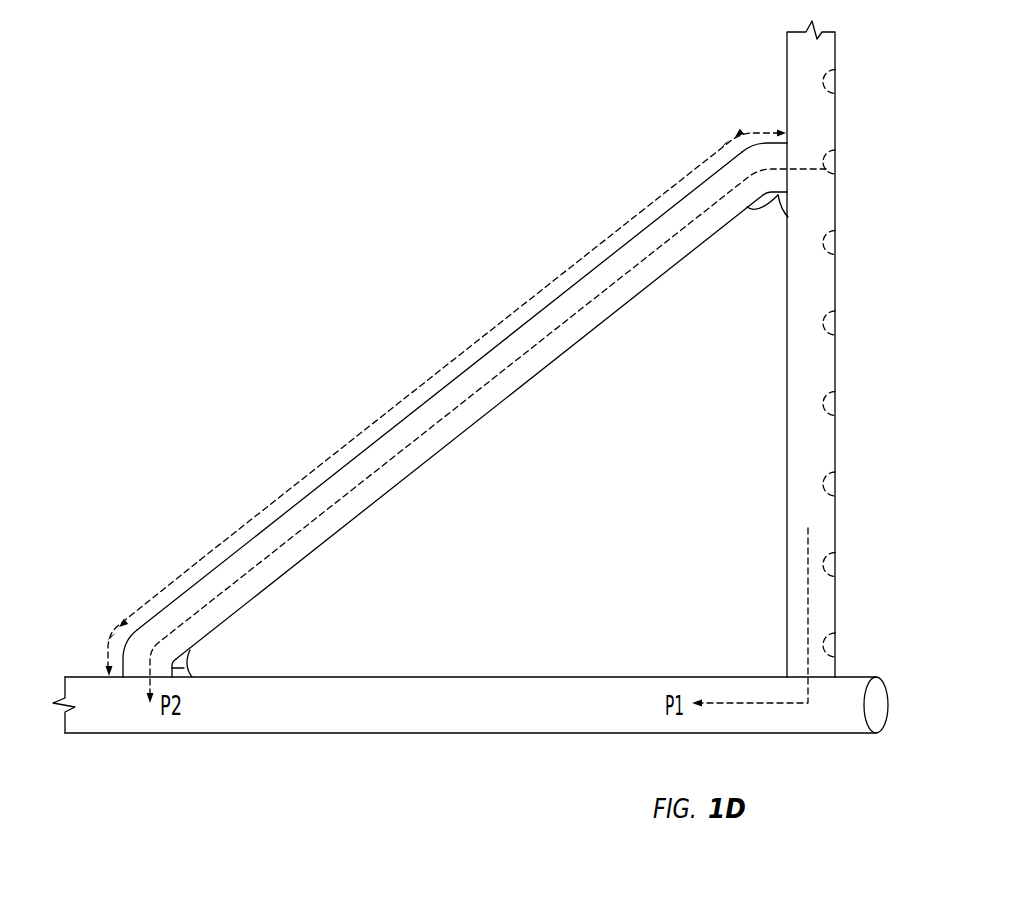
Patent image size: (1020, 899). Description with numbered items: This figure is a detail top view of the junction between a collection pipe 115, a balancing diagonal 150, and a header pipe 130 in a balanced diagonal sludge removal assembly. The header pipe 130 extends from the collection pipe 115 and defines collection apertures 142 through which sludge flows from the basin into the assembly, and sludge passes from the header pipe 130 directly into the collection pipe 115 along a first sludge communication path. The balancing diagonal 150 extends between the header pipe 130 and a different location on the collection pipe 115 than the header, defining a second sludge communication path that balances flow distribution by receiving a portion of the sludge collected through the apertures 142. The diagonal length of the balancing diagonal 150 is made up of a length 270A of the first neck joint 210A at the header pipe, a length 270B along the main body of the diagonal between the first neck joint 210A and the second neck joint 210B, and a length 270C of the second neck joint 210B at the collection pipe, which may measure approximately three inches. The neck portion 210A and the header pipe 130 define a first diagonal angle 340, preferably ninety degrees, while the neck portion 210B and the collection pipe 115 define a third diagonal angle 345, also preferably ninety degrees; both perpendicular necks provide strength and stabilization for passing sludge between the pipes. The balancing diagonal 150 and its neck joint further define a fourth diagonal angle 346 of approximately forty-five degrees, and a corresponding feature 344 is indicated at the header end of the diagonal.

The collection pipe 115 is at (447, 735).
The header pipe 130 is at (779, 439).
The collection apertures 142 is at (837, 242).
The balancing diagonal 150 is at (437, 391).
The first neck joint 210A is at (767, 143).
The second neck joint 210B is at (122, 677).
The length of first neck joint 270A is at (748, 132).
The length along the diagonal 270B is at (318, 468).
The length of second neck joint 270C is at (107, 651).
The first diagonal angle 340 is at (778, 197).
The upper bracket clamp portion 344 is at (753, 209).
The third diagonal angle 345 is at (192, 676).
The fourth diagonal angle 346 is at (190, 650).